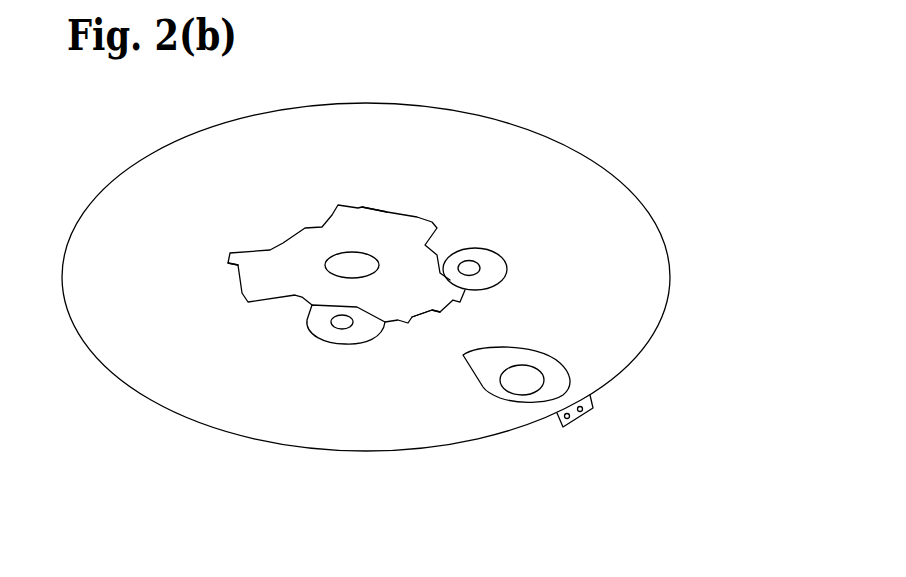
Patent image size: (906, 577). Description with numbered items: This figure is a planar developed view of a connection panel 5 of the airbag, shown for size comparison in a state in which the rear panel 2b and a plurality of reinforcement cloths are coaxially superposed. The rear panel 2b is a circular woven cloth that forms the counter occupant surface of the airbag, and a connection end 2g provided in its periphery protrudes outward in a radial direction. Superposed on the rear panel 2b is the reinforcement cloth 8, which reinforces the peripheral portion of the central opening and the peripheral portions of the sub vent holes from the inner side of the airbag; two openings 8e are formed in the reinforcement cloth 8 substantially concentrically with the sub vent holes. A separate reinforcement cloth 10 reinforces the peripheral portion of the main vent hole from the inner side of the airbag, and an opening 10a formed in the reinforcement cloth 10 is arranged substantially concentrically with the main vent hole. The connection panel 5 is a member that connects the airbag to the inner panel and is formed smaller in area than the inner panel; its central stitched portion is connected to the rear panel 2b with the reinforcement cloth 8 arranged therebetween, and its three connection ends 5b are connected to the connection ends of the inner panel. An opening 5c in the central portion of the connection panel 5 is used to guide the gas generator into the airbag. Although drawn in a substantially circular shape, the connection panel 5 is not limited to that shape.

The rear panel 2b is at (612, 232).
The connection end 2g is at (580, 418).
The connection panel 5 is at (291, 231).
The connection ends 5b is at (387, 212).
The opening 5c is at (380, 266).
The reinforcement cloth 8 is at (322, 348).
The openings 8e is at (343, 326).
The reinforcement cloth 10 is at (565, 363).
The opening 10a is at (540, 381).